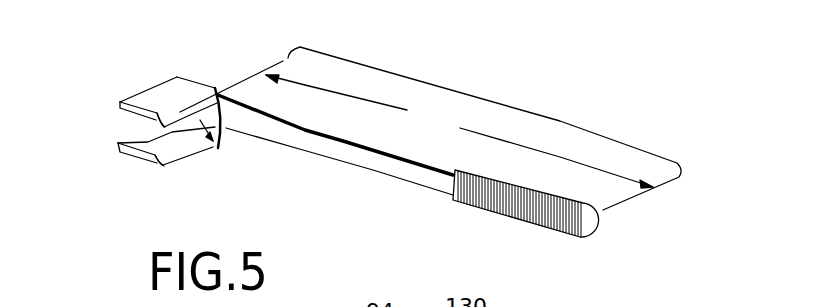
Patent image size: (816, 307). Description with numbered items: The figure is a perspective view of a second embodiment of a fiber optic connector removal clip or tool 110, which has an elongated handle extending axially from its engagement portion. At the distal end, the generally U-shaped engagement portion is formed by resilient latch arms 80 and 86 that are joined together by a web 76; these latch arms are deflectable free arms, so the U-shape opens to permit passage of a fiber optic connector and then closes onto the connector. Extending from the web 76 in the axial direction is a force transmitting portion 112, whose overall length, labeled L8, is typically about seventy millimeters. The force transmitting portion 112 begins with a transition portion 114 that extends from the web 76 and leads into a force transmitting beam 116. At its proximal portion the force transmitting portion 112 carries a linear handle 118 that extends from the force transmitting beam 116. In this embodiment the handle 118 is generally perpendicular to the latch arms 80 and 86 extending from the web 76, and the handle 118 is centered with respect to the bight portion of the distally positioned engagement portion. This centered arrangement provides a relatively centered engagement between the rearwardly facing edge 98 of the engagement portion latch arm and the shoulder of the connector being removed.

The web 76 is at (218, 148).
The latch arm 80 is at (143, 102).
The latch arm 86 is at (148, 142).
The rearwardly facing edge 98 is at (177, 127).
The fiber optic connector removal clip 110 is at (303, 148).
The force transmitting portion 112 is at (471, 94).
The transition portion 114 is at (215, 88).
The force transmitting beam 116 is at (367, 157).
The linear handle 118 is at (523, 221).